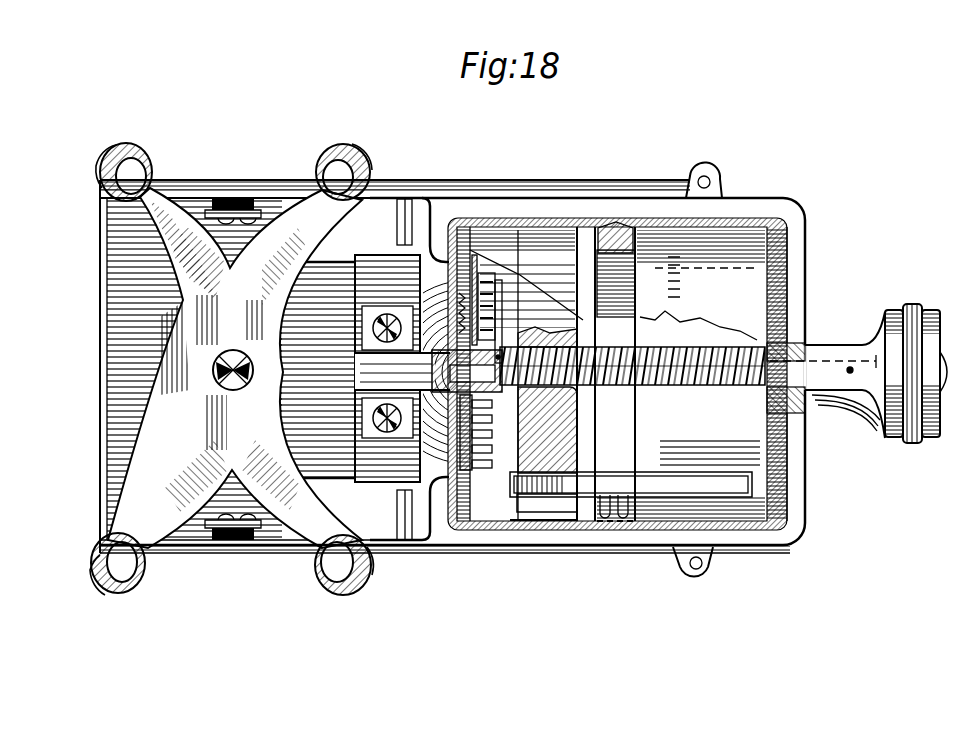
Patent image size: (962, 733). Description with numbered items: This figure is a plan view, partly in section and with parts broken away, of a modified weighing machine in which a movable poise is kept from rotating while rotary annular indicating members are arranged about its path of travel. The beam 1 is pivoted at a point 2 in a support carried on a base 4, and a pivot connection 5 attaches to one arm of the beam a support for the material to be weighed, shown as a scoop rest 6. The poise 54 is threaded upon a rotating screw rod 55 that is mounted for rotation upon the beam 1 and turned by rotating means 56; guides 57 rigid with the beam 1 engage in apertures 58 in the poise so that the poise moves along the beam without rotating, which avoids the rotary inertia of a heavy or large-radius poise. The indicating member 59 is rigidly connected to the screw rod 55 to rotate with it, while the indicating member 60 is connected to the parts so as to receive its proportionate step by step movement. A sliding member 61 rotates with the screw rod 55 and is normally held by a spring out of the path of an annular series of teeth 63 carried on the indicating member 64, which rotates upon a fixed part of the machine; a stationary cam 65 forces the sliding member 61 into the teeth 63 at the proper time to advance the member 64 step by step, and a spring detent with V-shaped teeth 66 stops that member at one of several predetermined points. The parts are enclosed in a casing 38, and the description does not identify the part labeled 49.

The beam 1 is at (788, 212).
The pivot point 2 is at (400, 210).
The base 4 is at (318, 370).
The pivot connection 5 is at (234, 196).
The scoop rest 6 is at (157, 181).
The casing 38 is at (790, 262).
The threaded spindle 49 is at (502, 320).
The poise 54 is at (550, 428).
The rotating screw rod 55 is at (617, 374).
The rotating means 56 is at (936, 440).
The guides 57 is at (612, 230).
The apertures 58 is at (528, 514).
The indicating member 59 is at (731, 520).
The indicating member 60 is at (543, 499).
The sliding member 61 is at (486, 278).
The annular series of teeth 63 is at (494, 452).
The indicating member 64 is at (558, 522).
The stationary cam 65 is at (512, 335).
The spring detent and V-shaped teeth 66 is at (466, 250).